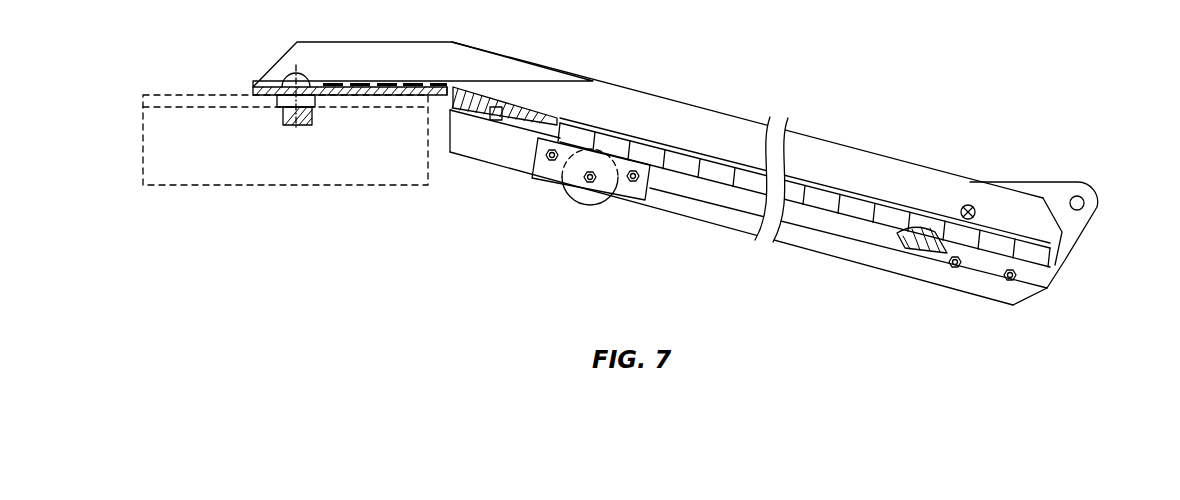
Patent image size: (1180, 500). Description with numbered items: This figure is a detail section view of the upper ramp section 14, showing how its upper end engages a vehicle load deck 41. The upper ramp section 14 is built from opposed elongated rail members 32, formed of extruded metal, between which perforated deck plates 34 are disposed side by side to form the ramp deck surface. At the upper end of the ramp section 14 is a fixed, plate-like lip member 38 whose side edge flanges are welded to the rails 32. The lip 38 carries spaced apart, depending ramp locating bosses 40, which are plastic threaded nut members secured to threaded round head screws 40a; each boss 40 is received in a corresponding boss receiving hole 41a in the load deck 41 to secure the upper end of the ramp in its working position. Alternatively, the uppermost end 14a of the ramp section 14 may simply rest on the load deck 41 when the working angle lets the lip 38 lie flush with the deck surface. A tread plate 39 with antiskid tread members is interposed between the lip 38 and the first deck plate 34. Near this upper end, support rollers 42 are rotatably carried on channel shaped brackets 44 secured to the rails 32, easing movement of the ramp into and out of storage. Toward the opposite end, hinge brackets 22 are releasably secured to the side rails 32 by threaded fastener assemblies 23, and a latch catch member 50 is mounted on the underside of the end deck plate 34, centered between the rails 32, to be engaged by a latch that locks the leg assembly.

The upper ramp section 14 is at (832, 118).
The uppermost end of the ramp section 14a is at (500, 170).
The hinge bracket 22 is at (1098, 205).
The threaded fastener assemblies 23 is at (953, 270).
The rail member 32 is at (680, 100).
The perforated deck plate 34 is at (612, 120).
The lip member 38 is at (330, 85).
The tread plate 39 is at (545, 100).
The ramp locating boss 40 is at (313, 120).
The round head screw 40a is at (292, 80).
The vehicle load deck 41 is at (195, 92).
The boss receiving hole 41a is at (276, 103).
The support roller 42 is at (592, 205).
The channel shaped bracket 44 is at (640, 198).
The latch catch member 50 is at (905, 245).